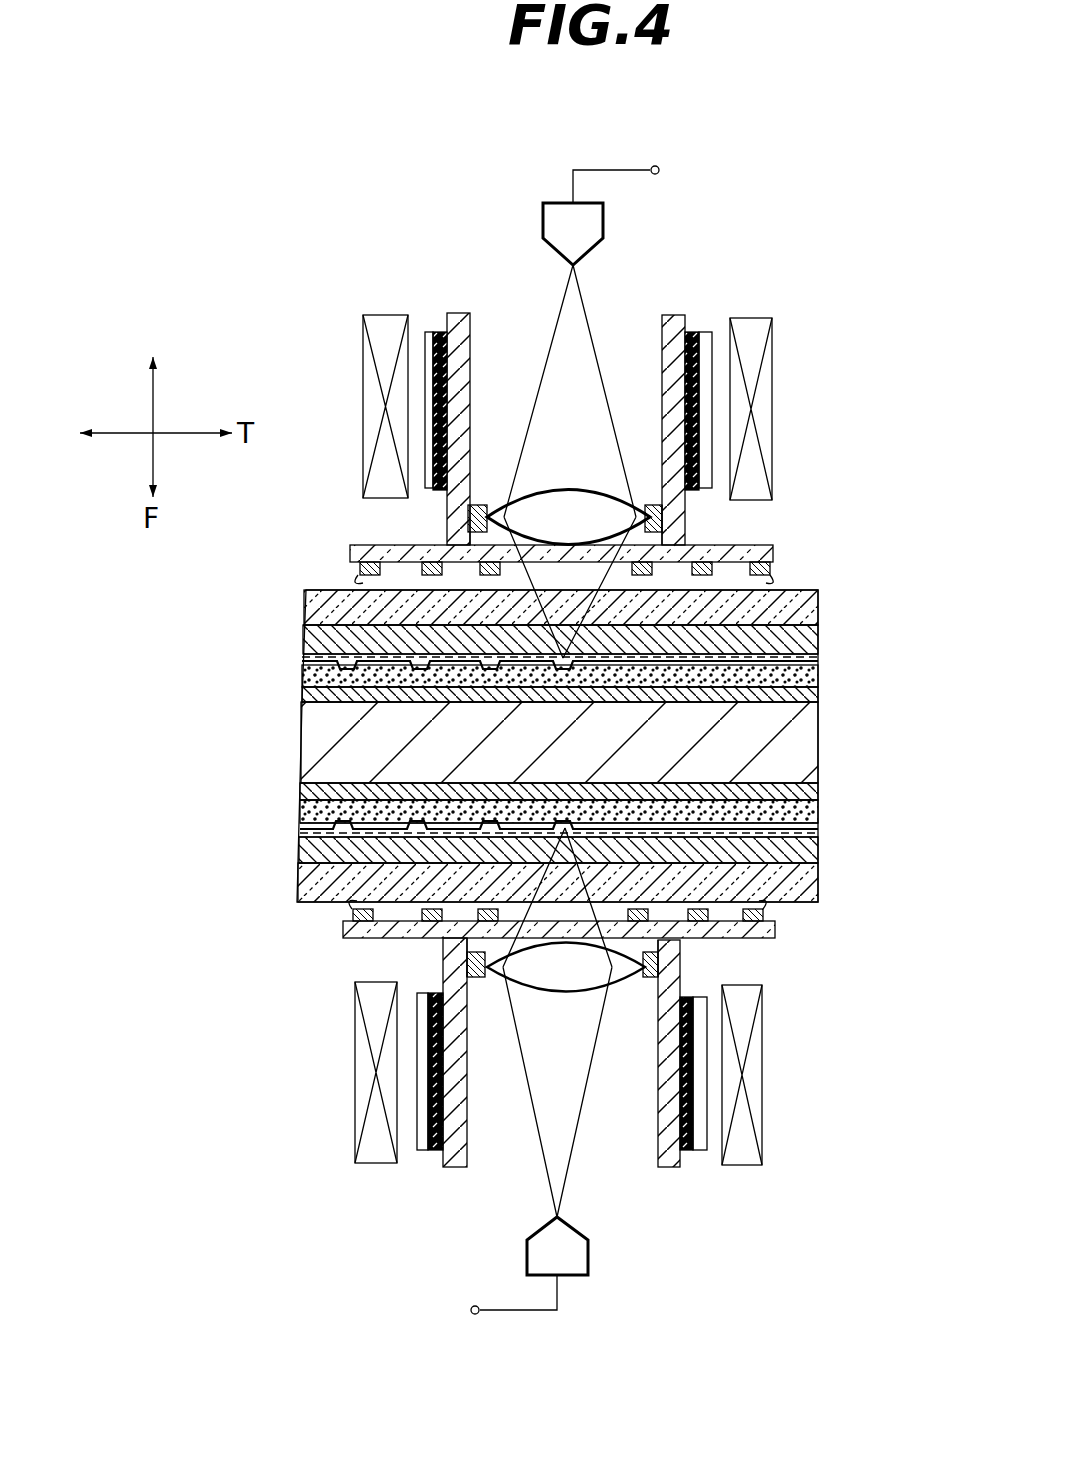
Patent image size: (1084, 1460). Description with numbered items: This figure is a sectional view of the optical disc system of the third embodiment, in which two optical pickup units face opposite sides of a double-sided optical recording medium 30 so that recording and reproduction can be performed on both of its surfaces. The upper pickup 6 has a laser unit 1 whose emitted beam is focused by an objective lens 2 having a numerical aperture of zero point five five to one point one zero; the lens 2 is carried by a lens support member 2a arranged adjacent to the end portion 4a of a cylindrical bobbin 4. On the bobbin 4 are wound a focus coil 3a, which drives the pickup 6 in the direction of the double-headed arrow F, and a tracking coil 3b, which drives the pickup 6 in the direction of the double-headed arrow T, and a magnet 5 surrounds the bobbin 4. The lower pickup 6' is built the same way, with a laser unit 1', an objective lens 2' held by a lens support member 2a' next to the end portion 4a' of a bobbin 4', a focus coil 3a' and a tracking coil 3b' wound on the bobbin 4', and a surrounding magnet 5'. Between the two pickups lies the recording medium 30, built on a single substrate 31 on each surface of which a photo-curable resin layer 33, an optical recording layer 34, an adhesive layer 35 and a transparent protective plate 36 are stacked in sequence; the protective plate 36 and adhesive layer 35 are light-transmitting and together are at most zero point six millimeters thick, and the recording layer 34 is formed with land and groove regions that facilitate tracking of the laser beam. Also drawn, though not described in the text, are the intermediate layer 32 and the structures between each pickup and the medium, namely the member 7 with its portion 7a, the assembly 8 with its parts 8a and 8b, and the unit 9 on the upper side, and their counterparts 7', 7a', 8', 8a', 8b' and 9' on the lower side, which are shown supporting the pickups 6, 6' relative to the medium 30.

The laser unit 1 is at (601, 215).
The objective lens 2 is at (565, 482).
The lens support member 2a is at (565, 447).
The focus coil 3a is at (592, 373).
The tracking coil 3b is at (590, 372).
The bobbin 4 is at (574, 401).
The end portion of the coil bobbin 4a is at (570, 517).
The magnet 5 is at (561, 406).
The pickup 6 is at (561, 386).
The substrate 7 is at (572, 549).
The terminal 7a is at (566, 544).
The slider 8 is at (572, 537).
The pad 8a is at (575, 553).
The slider plate 8b is at (576, 531).
The slider assembly 9 is at (572, 519).
The double-sided optical recording medium 30 is at (885, 716).
The substrate 31 is at (806, 752).
The intermediate layer 32 is at (818, 697).
The photo-curable resin layer 33 is at (818, 678).
The optical recording layer 34 is at (818, 658).
The adhesive layer 35 is at (818, 640).
The transparent protective plate 36 is at (818, 611).
The laser unit 1' is at (529, 1265).
The objective lens 2' is at (569, 1000).
The lens support member 2a' is at (562, 1024).
The focus coil 3a' is at (544, 1110).
The tracking coil 3b' is at (546, 1108).
The bobbin 4' is at (551, 1095).
The end portion of the coil bobbin 4a' is at (570, 965).
The magnet 5' is at (559, 1075).
The pickup 6' is at (559, 1095).
The substrate 7' is at (561, 947).
The terminal 7a' is at (567, 951).
The slider 8' is at (558, 943).
The pad 8a' is at (559, 927).
The slider plate 8b' is at (560, 949).
The slider assembly 9' is at (561, 958).